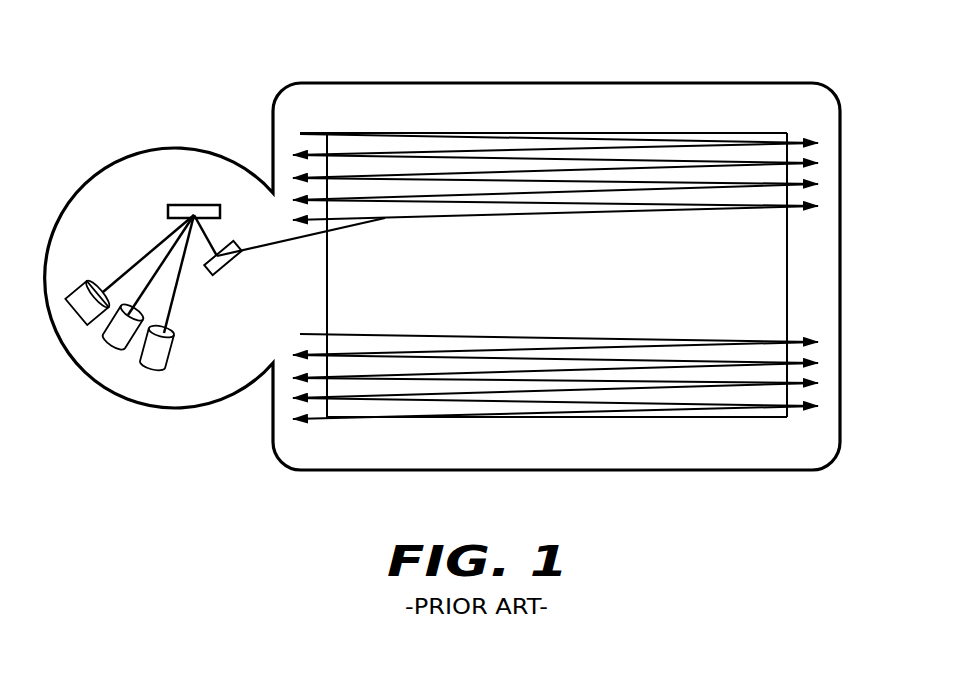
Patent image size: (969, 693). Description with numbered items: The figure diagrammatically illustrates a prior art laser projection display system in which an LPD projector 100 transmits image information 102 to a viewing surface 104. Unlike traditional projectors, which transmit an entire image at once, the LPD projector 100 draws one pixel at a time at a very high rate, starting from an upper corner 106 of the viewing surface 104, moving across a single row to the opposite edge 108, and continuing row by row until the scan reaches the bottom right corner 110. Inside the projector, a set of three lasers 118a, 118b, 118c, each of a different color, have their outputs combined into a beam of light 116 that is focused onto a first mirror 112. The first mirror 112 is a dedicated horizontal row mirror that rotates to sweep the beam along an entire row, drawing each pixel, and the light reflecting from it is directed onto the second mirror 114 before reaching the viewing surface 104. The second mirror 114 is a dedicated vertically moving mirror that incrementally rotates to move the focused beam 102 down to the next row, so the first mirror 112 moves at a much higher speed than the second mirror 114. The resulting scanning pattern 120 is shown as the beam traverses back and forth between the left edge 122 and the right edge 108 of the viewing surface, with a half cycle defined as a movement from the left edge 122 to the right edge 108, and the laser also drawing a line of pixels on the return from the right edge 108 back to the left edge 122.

The LPD projector 100 is at (186, 436).
The image information 102 is at (343, 229).
The viewing surface 104 is at (525, 287).
The upper corner 106 is at (327, 133).
The opposite edge 108 is at (787, 262).
The bottom right corner 110 is at (788, 418).
The first mirror 112 is at (178, 205).
The second mirror 114 is at (221, 270).
The beam of light 116 is at (170, 237).
The laser 118a is at (81, 287).
The laser 118b is at (113, 343).
The laser 118c is at (174, 350).
The scanning pattern 120 is at (640, 236).
The left edge 122 is at (327, 301).